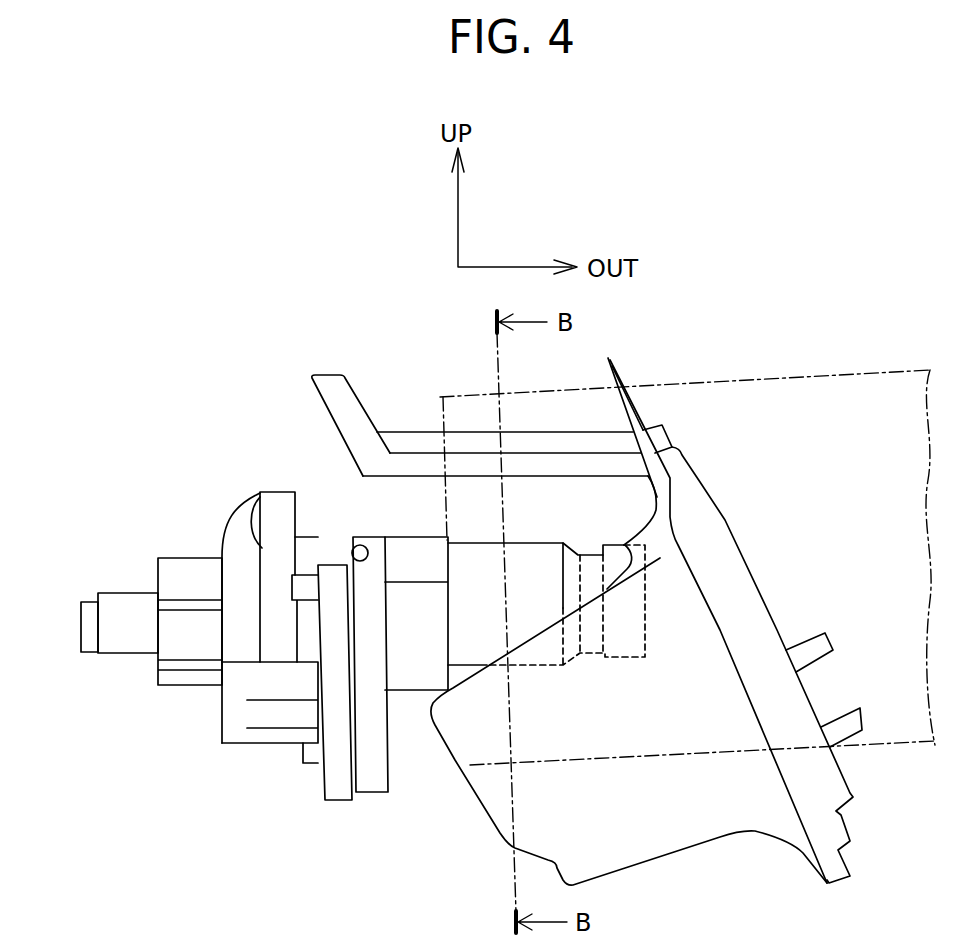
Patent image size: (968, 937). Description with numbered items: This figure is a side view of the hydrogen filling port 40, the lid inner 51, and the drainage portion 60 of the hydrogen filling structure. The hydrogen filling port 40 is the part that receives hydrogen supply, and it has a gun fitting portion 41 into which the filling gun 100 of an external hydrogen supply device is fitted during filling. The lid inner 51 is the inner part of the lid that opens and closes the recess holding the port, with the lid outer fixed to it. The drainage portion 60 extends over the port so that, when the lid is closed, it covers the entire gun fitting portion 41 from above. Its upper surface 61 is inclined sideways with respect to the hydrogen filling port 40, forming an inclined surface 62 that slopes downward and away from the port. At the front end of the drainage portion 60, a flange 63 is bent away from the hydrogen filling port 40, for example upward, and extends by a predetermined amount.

The hydrogen filling port 40 is at (229, 523).
The gun fitting portion 41 is at (544, 556).
The lid inner 51 is at (708, 510).
The drainage portion 60 is at (484, 455).
The upper surface 61 is at (550, 429).
The inclined surface 62 is at (466, 440).
The flange 63 is at (330, 382).
The filling gun 100 is at (758, 402).